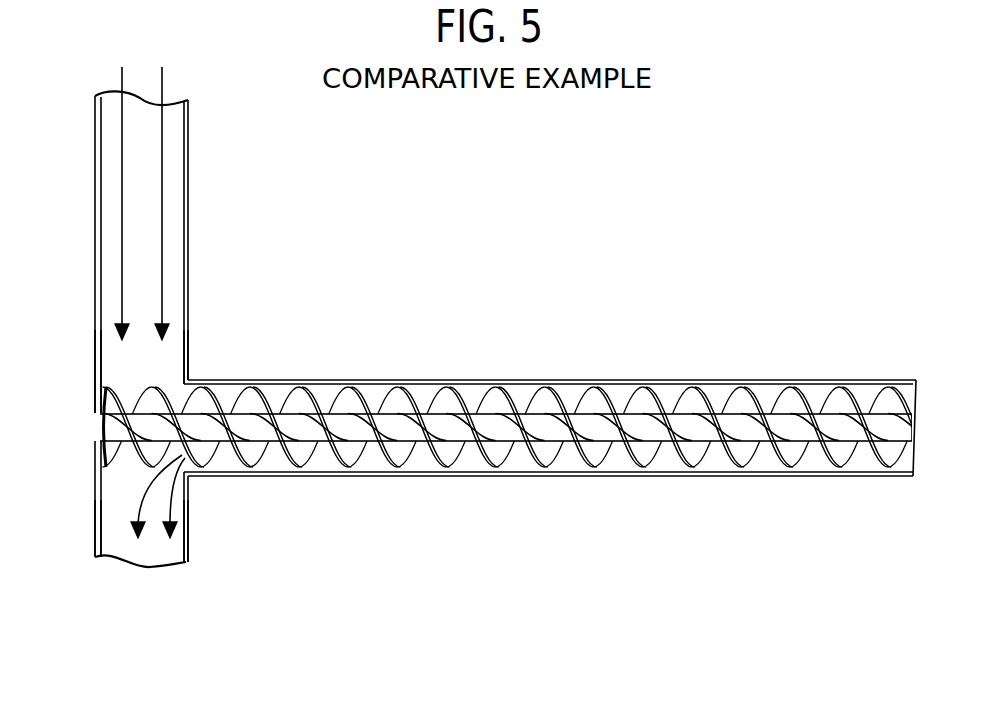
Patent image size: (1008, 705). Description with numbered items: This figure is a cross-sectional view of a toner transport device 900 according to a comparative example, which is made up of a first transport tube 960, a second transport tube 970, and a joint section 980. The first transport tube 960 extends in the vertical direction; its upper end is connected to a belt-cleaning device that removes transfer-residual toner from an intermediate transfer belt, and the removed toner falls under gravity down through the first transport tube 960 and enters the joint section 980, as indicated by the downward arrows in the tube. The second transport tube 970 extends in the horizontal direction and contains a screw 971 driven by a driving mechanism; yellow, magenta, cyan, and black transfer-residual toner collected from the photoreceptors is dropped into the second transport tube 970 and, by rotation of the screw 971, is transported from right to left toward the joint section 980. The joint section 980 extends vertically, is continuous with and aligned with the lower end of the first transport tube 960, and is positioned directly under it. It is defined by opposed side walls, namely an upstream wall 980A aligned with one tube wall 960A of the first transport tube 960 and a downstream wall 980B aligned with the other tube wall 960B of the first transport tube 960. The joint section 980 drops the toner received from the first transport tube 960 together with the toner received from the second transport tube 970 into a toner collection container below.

The toner transport device 900 is at (493, 333).
The first transport tube 960 is at (188, 173).
The tube wall 960A is at (188, 346).
The tube wall 960B is at (95, 342).
The second transport tube 970 is at (718, 381).
The screw 971 is at (470, 396).
The joint section 980 is at (190, 510).
The upstream wall 980A is at (191, 542).
The downstream wall 980B is at (92, 540).